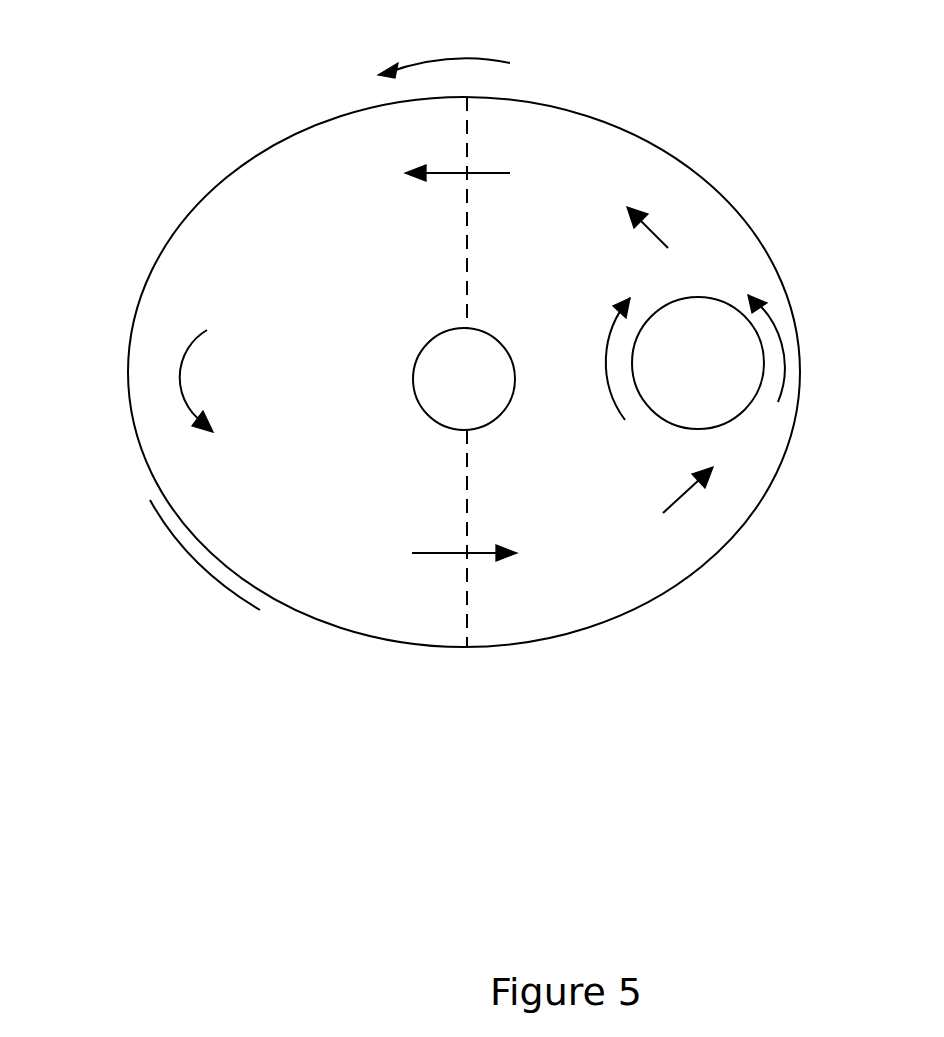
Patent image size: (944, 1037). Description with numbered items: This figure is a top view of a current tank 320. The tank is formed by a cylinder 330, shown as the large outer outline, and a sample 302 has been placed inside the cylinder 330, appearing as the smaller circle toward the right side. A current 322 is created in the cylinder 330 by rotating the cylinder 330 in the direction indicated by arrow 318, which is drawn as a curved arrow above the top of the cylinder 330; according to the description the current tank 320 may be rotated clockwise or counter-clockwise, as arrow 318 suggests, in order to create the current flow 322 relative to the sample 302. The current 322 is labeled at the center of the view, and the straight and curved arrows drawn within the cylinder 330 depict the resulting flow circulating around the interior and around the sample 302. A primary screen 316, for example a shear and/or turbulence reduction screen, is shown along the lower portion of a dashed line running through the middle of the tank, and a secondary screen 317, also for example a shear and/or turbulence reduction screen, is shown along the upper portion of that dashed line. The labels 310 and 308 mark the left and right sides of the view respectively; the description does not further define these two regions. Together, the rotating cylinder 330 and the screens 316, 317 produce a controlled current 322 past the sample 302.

The sample 302 is at (695, 362).
The right region 308 is at (879, 390).
The left region 310 is at (40, 390).
The primary screen 316 is at (463, 606).
The secondary screen 317 is at (468, 245).
The arrow 318 is at (444, 48).
The current tank 320 is at (193, 537).
The current 322 is at (464, 379).
The cylinder 330 is at (226, 176).